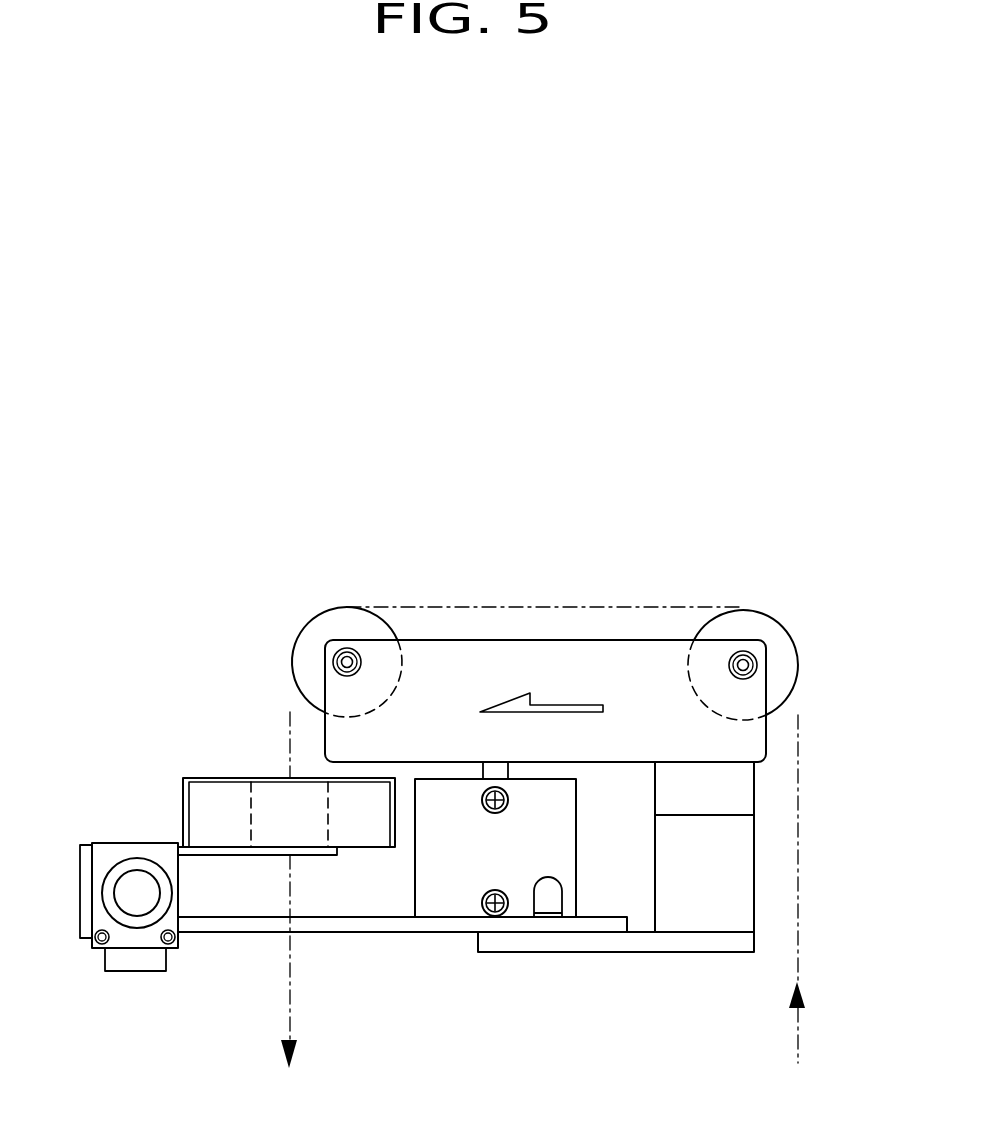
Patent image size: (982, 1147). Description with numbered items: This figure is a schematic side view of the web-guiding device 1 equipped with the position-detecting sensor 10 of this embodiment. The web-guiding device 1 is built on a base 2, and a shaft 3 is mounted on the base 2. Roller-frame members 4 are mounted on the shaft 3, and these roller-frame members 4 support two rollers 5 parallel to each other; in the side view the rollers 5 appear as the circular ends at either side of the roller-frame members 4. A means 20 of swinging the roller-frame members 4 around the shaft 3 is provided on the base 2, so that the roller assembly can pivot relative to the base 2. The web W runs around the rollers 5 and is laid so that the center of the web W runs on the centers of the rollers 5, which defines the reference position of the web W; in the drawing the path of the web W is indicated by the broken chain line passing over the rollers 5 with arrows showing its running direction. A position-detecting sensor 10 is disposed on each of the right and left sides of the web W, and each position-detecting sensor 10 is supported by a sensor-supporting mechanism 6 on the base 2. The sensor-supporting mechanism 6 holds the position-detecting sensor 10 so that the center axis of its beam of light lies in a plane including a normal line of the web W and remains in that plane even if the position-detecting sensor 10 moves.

The web-guiding device 1 is at (232, 498).
The base 2 is at (519, 938).
The shaft 3 is at (688, 905).
The roller-frame member 4 is at (742, 738).
The roller 5 is at (330, 625).
The sensor-supporting mechanism 6 is at (110, 814).
The position-detecting sensor 10 is at (188, 747).
The means of swinging the roller-frame members 20 is at (432, 898).
The web W is at (610, 607).